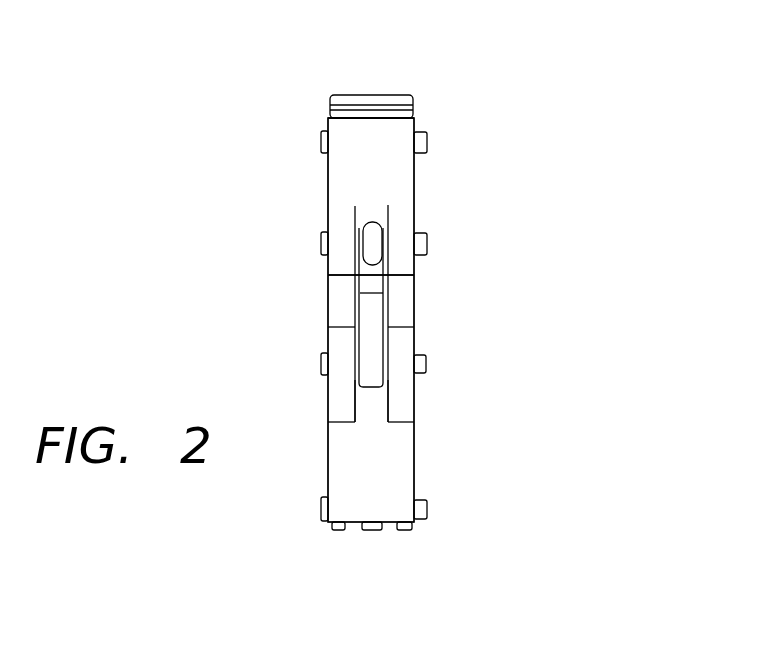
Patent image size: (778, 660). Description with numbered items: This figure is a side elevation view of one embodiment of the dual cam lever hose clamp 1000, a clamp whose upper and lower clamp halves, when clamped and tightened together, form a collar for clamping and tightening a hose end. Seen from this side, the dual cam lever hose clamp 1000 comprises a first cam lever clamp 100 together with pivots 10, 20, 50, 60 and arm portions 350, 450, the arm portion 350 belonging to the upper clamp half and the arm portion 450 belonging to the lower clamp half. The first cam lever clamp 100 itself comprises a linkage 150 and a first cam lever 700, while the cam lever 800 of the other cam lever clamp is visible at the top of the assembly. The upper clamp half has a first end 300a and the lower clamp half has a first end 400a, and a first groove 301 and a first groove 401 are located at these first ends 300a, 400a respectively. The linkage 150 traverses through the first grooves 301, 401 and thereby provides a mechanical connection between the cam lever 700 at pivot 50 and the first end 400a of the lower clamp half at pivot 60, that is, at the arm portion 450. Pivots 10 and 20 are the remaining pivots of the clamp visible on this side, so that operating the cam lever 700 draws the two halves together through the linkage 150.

The dual cam lever hose clamp 1000 is at (495, 110).
The first cam lever clamp 100 is at (430, 193).
The cam lever 800 is at (350, 93).
The first cam lever 700 is at (347, 170).
The pivot 10 is at (320, 148).
The pivot 50 is at (320, 252).
The pivot 60 is at (321, 370).
The pivot 20 is at (320, 517).
The arm portion 350 is at (327, 301).
The first groove 301 is at (380, 190).
The linkage 150 is at (372, 331).
The first end of the upper clamp half 300a is at (401, 288).
The first end of the lower clamp half 400a is at (401, 388).
The arm portion 450 is at (401, 465).
The first groove 401 is at (366, 440).